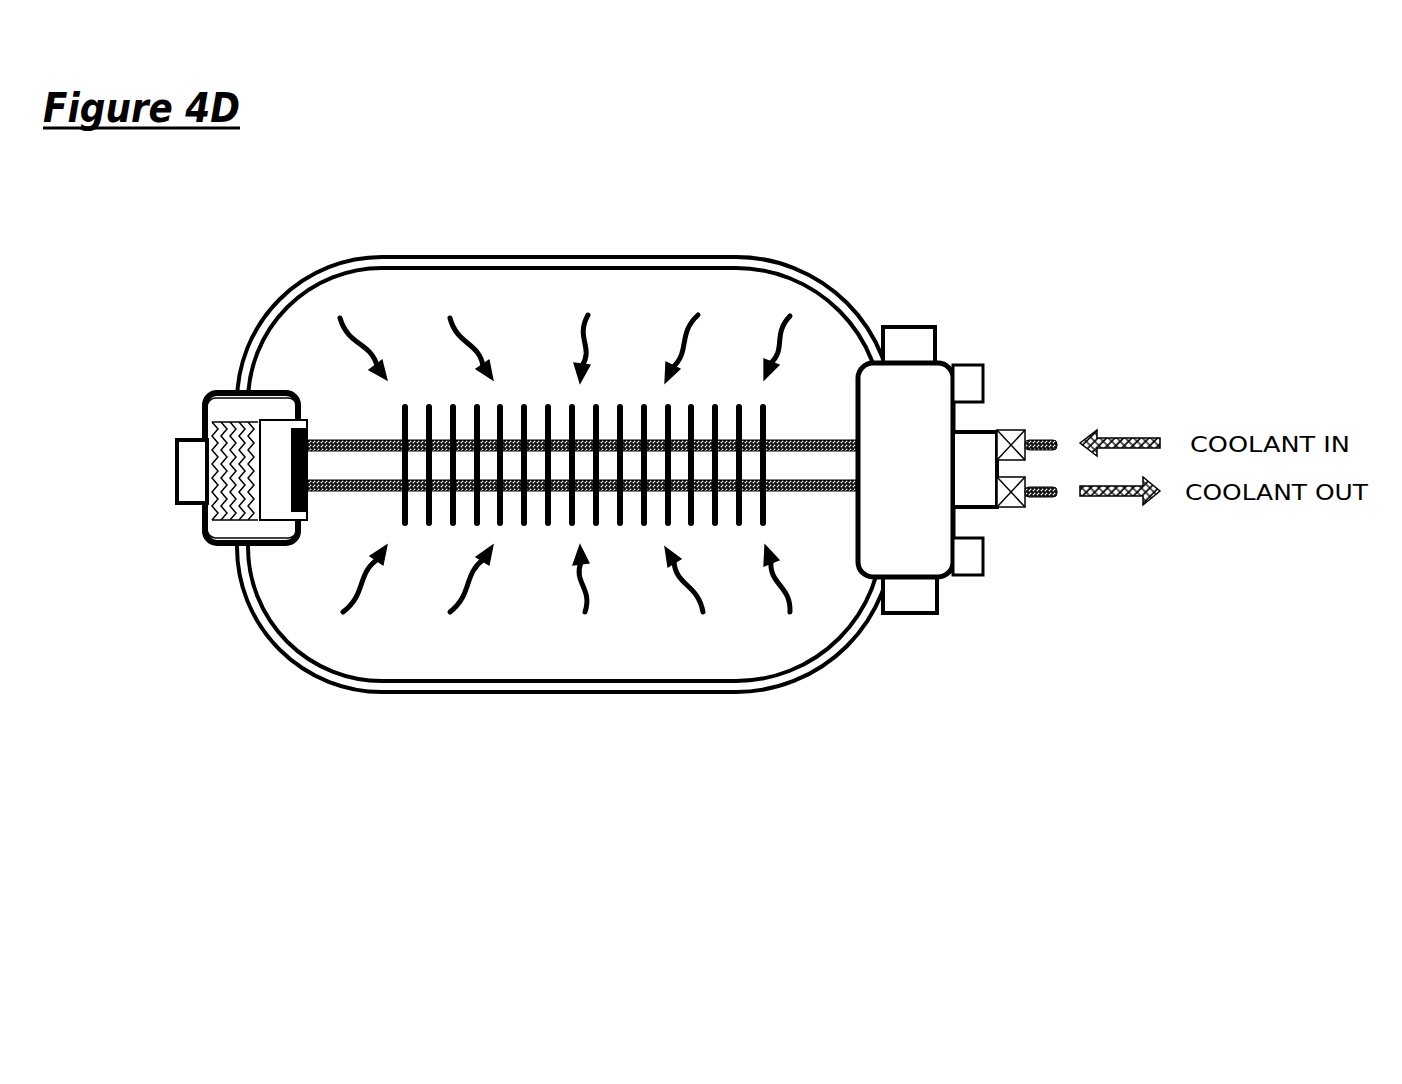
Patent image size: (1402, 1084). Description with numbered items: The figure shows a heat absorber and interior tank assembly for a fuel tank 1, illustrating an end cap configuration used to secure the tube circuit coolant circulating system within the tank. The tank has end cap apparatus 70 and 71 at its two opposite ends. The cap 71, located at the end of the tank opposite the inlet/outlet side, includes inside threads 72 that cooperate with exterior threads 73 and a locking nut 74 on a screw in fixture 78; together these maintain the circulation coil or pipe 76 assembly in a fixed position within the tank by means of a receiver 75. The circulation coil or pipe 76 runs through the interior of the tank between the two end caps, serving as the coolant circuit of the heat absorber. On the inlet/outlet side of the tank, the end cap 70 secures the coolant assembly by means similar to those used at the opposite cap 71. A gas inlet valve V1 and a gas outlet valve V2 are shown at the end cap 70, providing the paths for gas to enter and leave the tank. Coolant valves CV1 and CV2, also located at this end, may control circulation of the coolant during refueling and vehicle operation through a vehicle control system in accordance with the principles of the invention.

The tank 1 is at (387, 693).
The end cap apparatus 70 is at (925, 408).
The cap 71 is at (217, 393).
The inside threads 72 is at (210, 540).
The exterior threads 73 is at (222, 425).
The locking nut 74 is at (200, 473).
The receiver 75 is at (298, 403).
The circulation coil or pipe 76 is at (340, 440).
The screw in fixture 78 is at (203, 503).
The gas inlet valve V1 is at (985, 380).
The gas outlet valve V2 is at (983, 558).
The coolant valve CV1 is at (1023, 430).
The coolant valve CV2 is at (1025, 507).